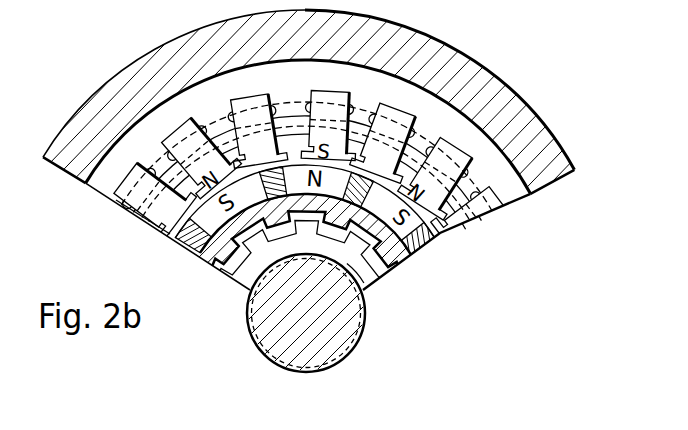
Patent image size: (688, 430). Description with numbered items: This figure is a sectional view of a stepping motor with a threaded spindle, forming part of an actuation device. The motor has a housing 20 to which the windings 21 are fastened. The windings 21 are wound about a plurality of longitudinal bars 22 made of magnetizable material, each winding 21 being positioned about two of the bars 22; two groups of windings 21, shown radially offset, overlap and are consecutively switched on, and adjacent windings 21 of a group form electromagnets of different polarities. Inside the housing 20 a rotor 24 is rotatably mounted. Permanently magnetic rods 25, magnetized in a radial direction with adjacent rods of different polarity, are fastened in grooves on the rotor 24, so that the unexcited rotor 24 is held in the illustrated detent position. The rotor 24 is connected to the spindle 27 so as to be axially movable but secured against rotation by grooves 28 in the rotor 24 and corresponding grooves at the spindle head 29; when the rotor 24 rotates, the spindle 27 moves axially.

The housing 20 is at (538, 146).
The windings 21 is at (357, 110).
The longitudinal bars 22 is at (417, 152).
The rotor 24 is at (398, 252).
The permanently magnetic rods 25 is at (405, 226).
The spindle 27 is at (318, 342).
The grooves 28 is at (382, 258).
The spindle head 29 is at (352, 269).